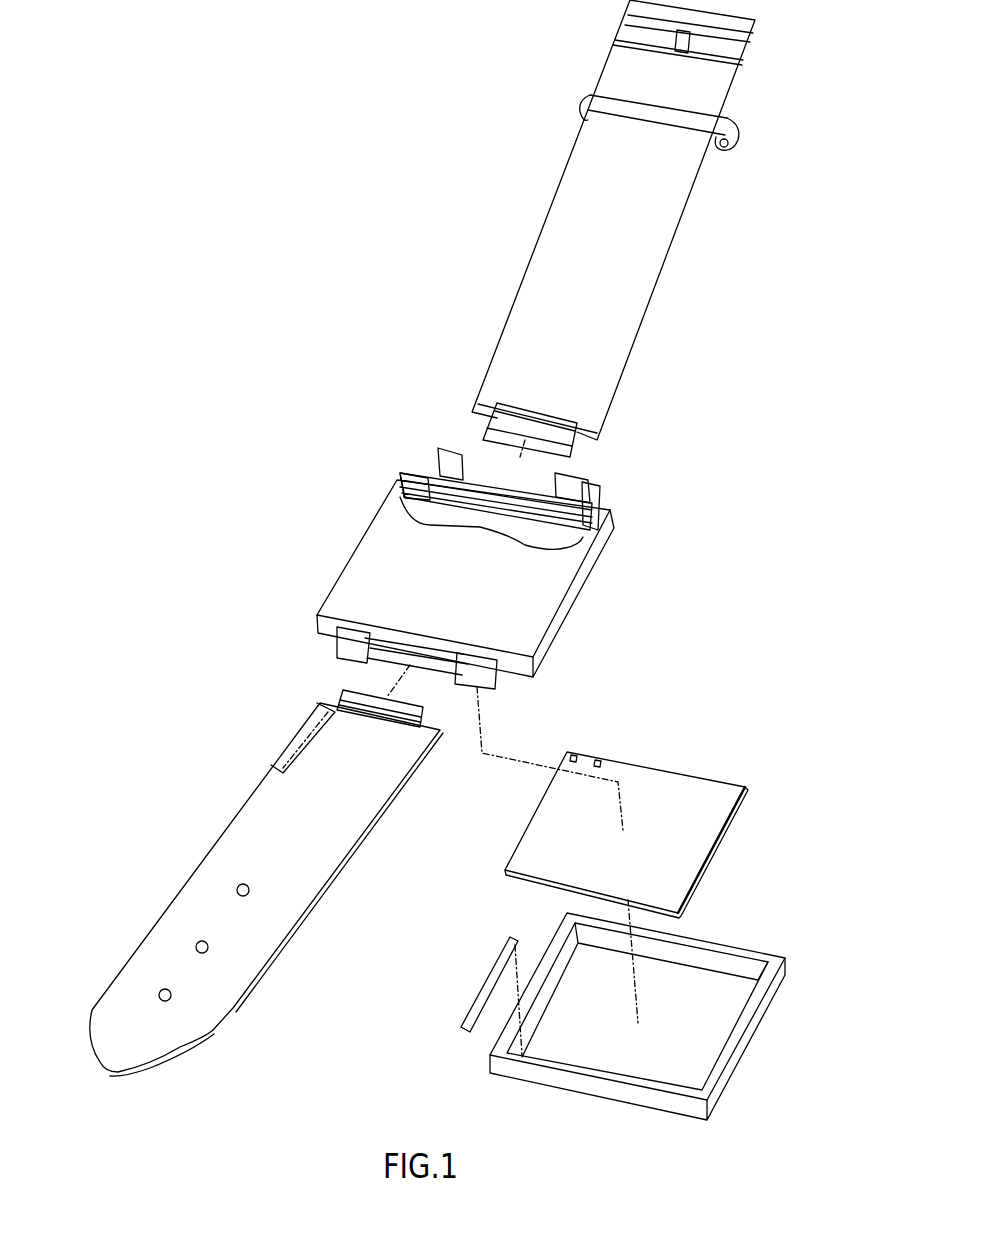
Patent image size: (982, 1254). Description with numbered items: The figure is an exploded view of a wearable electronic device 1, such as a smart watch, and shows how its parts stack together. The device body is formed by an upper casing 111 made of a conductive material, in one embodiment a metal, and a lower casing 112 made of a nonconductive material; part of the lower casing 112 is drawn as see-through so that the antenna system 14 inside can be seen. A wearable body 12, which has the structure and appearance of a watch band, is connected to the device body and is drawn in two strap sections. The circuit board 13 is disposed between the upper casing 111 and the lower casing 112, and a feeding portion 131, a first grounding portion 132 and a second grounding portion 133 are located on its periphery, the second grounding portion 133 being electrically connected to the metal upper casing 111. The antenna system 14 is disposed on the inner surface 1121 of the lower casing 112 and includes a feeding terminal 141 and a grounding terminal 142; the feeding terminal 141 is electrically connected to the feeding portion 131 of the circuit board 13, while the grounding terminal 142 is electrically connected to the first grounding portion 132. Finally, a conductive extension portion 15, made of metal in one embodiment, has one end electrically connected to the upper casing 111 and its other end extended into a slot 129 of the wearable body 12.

The wearable electronic device 1 is at (157, 167).
The wearable body 12 is at (573, 210).
The circuit board 13 is at (667, 780).
The antenna system 14 is at (417, 483).
The conductive extension portion 15 is at (470, 1013).
The upper casing 111 is at (707, 1096).
The lower casing 112 is at (357, 570).
The slot 129 is at (292, 740).
The feeding portion 131 is at (598, 760).
The first grounding portion 132 is at (575, 757).
The second grounding portion 133 is at (678, 912).
The feeding terminal 141 is at (430, 487).
The grounding terminal 142 is at (420, 487).
The inner surface 1121 is at (610, 478).